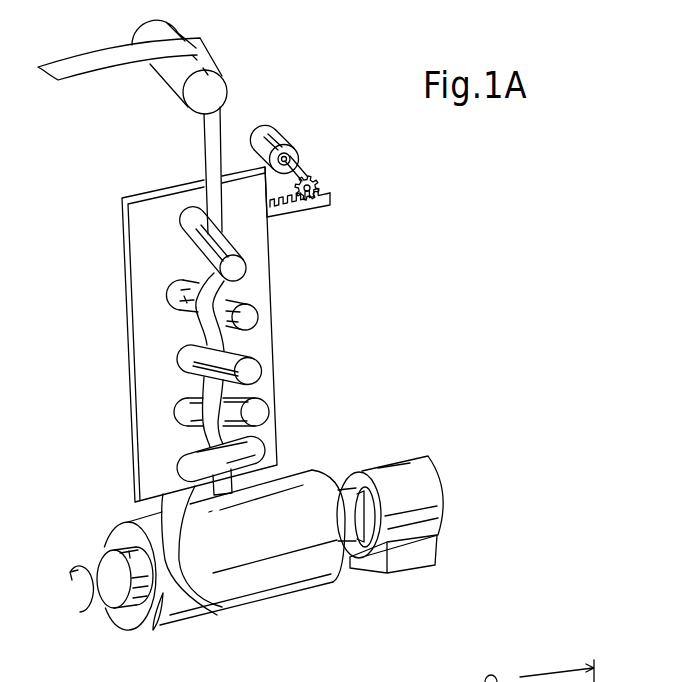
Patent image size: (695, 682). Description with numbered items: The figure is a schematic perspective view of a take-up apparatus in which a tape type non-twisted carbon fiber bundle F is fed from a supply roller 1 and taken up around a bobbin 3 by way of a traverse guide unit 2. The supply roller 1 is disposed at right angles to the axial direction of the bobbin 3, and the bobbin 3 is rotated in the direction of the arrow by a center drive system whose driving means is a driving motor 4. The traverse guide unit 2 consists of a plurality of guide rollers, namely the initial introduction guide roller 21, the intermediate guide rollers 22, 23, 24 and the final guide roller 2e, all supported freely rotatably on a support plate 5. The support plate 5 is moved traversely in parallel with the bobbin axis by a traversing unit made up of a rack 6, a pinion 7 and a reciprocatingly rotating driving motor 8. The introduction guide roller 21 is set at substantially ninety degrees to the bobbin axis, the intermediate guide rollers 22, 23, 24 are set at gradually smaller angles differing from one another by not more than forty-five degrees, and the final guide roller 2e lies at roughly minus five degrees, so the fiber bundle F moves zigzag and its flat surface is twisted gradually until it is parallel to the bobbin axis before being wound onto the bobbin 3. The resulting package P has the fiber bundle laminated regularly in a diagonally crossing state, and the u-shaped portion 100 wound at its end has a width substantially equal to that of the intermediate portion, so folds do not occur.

The tape type non-twisted carbon fiber bundle F is at (88, 62).
The supply roller 1 is at (170, 70).
The traverse guide unit 2 is at (275, 280).
The initial introduction guide roller 21 is at (190, 230).
The intermediate guide roller 22 is at (170, 288).
The intermediate guide roller 23 is at (258, 368).
The intermediate guide roller 24 is at (260, 408).
The final guide roller 2e is at (253, 450).
The bobbin 3 is at (122, 540).
The driving motor 4 is at (413, 470).
The support plate 5 is at (134, 379).
The rack 6 is at (325, 194).
The pinion 7 is at (308, 179).
The reciprocatingly rotating driving motor 8 is at (280, 130).
The u-shaped portion 100 is at (157, 630).
The package P is at (294, 606).